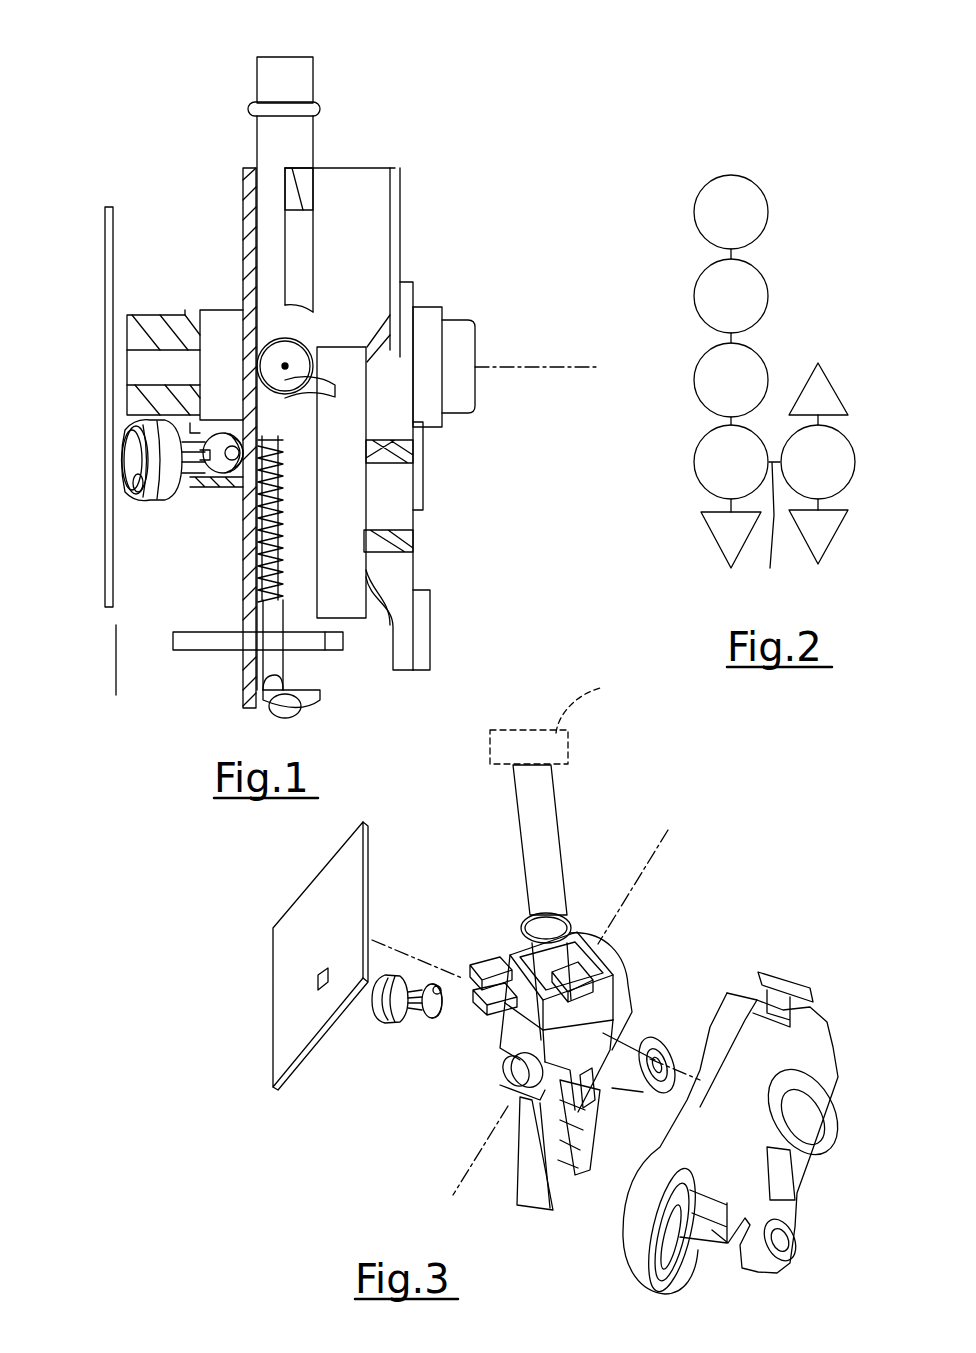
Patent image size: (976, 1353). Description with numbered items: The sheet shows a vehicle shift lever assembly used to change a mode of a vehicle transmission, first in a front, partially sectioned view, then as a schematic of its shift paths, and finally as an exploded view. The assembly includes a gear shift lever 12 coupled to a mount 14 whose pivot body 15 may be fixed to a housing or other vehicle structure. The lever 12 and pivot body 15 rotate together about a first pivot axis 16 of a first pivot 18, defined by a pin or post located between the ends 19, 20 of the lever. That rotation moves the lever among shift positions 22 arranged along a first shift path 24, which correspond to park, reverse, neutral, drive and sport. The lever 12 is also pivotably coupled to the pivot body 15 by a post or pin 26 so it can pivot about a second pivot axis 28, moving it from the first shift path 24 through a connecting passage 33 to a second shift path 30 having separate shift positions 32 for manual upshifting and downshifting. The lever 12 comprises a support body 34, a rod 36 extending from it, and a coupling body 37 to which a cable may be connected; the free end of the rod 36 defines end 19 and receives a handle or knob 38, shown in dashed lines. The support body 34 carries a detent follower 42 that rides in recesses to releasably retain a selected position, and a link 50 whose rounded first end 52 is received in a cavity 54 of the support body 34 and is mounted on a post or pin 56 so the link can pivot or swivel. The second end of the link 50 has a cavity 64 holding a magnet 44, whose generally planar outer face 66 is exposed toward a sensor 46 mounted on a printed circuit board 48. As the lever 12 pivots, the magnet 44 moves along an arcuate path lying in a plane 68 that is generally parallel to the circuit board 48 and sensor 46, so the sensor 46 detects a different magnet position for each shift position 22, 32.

In FIG. 1, the gear shift lever 12 is at (289, 58).
In FIG. 3, the gear shift lever 12 is at (512, 754).
In FIG. 1, the mount 14 is at (440, 268).
In FIG. 3, the mount 14 is at (474, 1085).
In FIG. 1, the pivot body 15 is at (215, 312).
In FIG. 3, the pivot body 15 is at (612, 962).
In FIG. 1, the first pivot axis 16 is at (542, 367).
In FIG. 3, the first pivot axis 16 is at (385, 946).
In FIG. 1, the first pivot 18 is at (455, 327).
In FIG. 3, the first pivot 18 is at (647, 1030).
In FIG. 1, the end of shift lever 19 is at (281, 44).
In FIG. 3, the end of shift lever 19 is at (520, 760).
In FIG. 1, the end of shift lever 20 is at (246, 674).
In FIG. 3, the end of shift lever 20 is at (583, 1165).
In FIG. 2, the shift positions 22 is at (766, 215).
In FIG. 2, the first shift path 24 is at (770, 165).
In FIG. 1, the post or pin 26 is at (268, 358).
In FIG. 3, the post or pin 26 is at (504, 1066).
In FIG. 1, the second pivot axis 28 is at (285, 366).
In FIG. 3, the second pivot axis 28 is at (668, 830).
In FIG. 2, the second shift path 30 is at (850, 366).
In FIG. 2, the shift positions 32 is at (843, 408).
In FIG. 2, the connecting passage 33 is at (772, 531).
In FIG. 1, the support body 34 is at (242, 185).
In FIG. 3, the support body 34 is at (543, 1214).
In FIG. 1, the rod 36 is at (316, 134).
In FIG. 3, the rod 36 is at (545, 798).
In FIG. 1, the coupling body 37 is at (378, 178).
In FIG. 3, the coupling body 37 is at (870, 1028).
In FIG. 3, the handle or knob 38 is at (563, 719).
In FIG. 1, the detent follower 42 is at (276, 693).
In FIG. 1, the sensor element (magnet) 44 is at (109, 517).
In FIG. 1, the sensor element (sensor) 46 is at (117, 450).
In FIG. 3, the sensor element (sensor) 46 is at (326, 988).
In FIG. 1, the printed circuit board 48 is at (103, 582).
In FIG. 3, the printed circuit board 48 is at (306, 968).
In FIG. 1, the link 50 is at (186, 500).
In FIG. 3, the link 50 is at (413, 973).
In FIG. 1, the first end of link 52 is at (220, 468).
In FIG. 3, the first end of link 52 is at (442, 1003).
In FIG. 1, the cavity 54 is at (228, 450).
In FIG. 1, the post or pin 56 is at (229, 449).
In FIG. 3, the post or pin 56 is at (438, 985).
In FIG. 1, the cavity 64 is at (138, 486).
In FIG. 1, the outer face of magnet 66 is at (135, 457).
In FIG. 1, the plane 68 is at (115, 652).